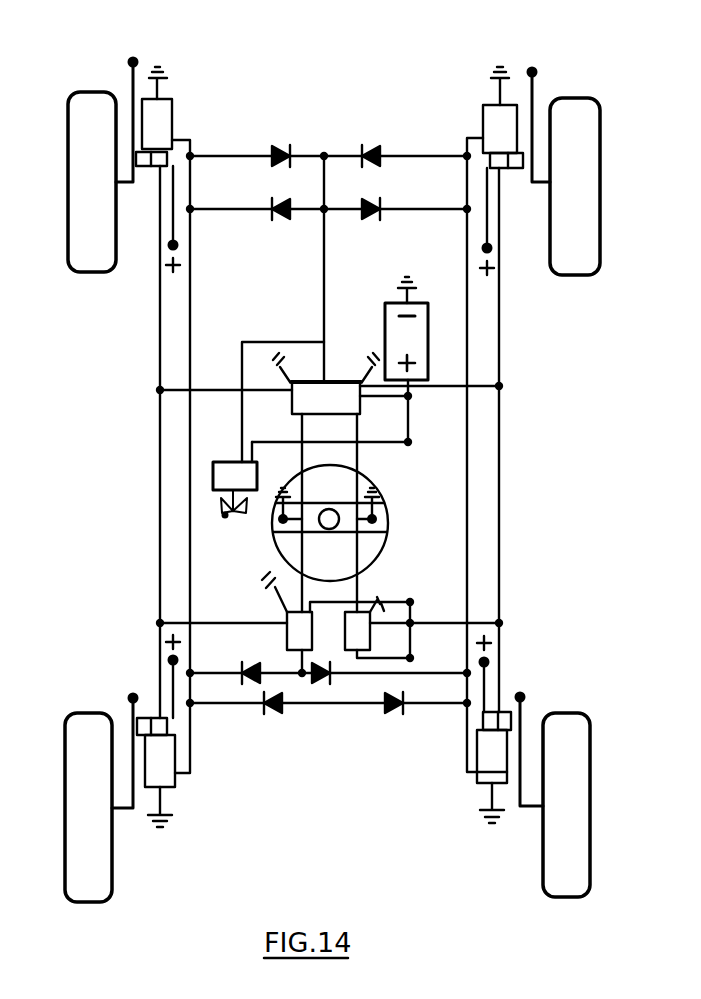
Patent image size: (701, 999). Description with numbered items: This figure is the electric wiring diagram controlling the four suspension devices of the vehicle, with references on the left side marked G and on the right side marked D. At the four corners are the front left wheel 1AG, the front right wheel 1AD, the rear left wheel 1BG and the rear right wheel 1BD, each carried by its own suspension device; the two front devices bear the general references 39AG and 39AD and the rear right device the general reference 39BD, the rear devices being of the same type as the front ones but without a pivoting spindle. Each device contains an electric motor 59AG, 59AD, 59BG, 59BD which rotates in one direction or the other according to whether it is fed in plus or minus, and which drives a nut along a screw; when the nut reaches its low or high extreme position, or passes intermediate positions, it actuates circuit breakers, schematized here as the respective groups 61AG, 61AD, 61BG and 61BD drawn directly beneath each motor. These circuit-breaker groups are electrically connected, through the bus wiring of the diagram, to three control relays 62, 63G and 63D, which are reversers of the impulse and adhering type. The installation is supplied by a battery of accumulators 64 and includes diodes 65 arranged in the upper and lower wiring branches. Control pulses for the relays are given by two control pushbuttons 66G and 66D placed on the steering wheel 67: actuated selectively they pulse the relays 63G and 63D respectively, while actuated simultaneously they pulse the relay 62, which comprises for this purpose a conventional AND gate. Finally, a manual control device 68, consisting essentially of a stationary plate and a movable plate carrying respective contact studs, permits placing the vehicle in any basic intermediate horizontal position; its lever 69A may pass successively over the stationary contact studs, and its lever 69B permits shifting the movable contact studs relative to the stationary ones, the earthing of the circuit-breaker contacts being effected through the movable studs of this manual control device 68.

The front left wheel 1AG is at (84, 201).
The front right wheel 1AD is at (578, 227).
The rear left wheel 1BG is at (93, 853).
The rear right wheel 1BD is at (563, 848).
The front left suspension device 39AG is at (132, 97).
The front right suspension device 39AD is at (538, 120).
The rear right suspension device 39BD is at (522, 750).
The electric motor 59AG is at (157, 122).
The electric motor 59AD is at (490, 128).
The electric motor 59BG is at (163, 767).
The electric motor 59BD is at (490, 772).
The group of circuit breakers 61AG is at (153, 170).
The group of circuit breakers 61AD is at (520, 165).
The group of circuit breakers 61BG is at (150, 725).
The group of circuit breakers 61BD is at (492, 724).
The diodes 65 is at (355, 203).
The battery of accumulators 64 is at (412, 347).
The control relay 62 is at (343, 405).
The steering wheel 67 is at (370, 477).
The control pushbutton 66G is at (283, 519).
The control pushbutton 66D is at (372, 519).
The manual control device 68 is at (225, 475).
The lever 69A is at (226, 503).
The lever 69B is at (225, 515).
The control relay 63G is at (298, 635).
The control relay 63D is at (363, 643).